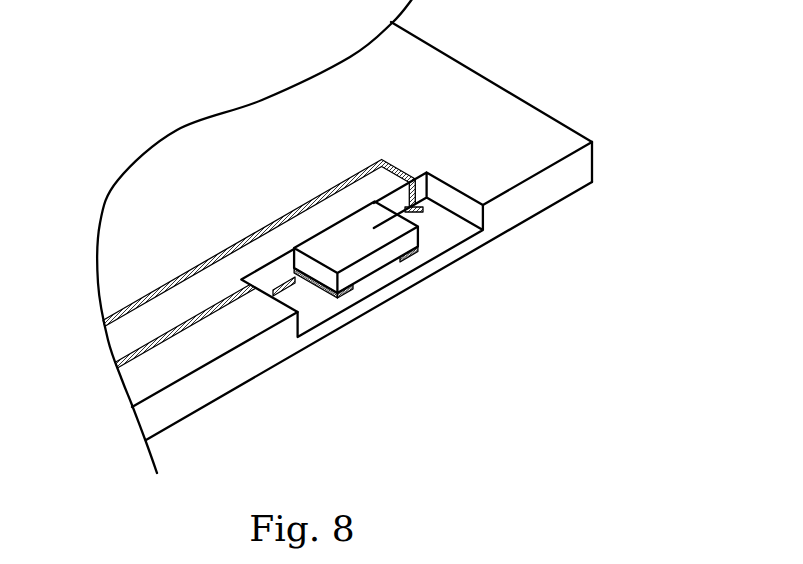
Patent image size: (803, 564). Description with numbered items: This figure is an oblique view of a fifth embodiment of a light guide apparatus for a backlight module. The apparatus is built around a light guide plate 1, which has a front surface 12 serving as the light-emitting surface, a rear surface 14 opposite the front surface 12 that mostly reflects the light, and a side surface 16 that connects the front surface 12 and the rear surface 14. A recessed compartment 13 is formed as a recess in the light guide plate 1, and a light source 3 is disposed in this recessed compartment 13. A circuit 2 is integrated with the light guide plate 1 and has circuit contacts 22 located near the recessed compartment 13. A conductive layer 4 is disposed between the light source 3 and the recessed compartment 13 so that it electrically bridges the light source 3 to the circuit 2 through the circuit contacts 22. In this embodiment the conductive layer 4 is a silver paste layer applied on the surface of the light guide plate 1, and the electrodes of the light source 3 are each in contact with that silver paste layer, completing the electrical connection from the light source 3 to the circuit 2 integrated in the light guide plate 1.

The light guide plate 1 is at (377, 236).
The circuit 2 is at (205, 315).
The light source 3 is at (335, 243).
The conductive layer 4 is at (353, 290).
The front surface 12 is at (427, 63).
The recessed compartment 13 is at (472, 175).
The rear surface 14 is at (540, 213).
The side surface 16 is at (582, 165).
The circuit contacts 22 is at (297, 287).